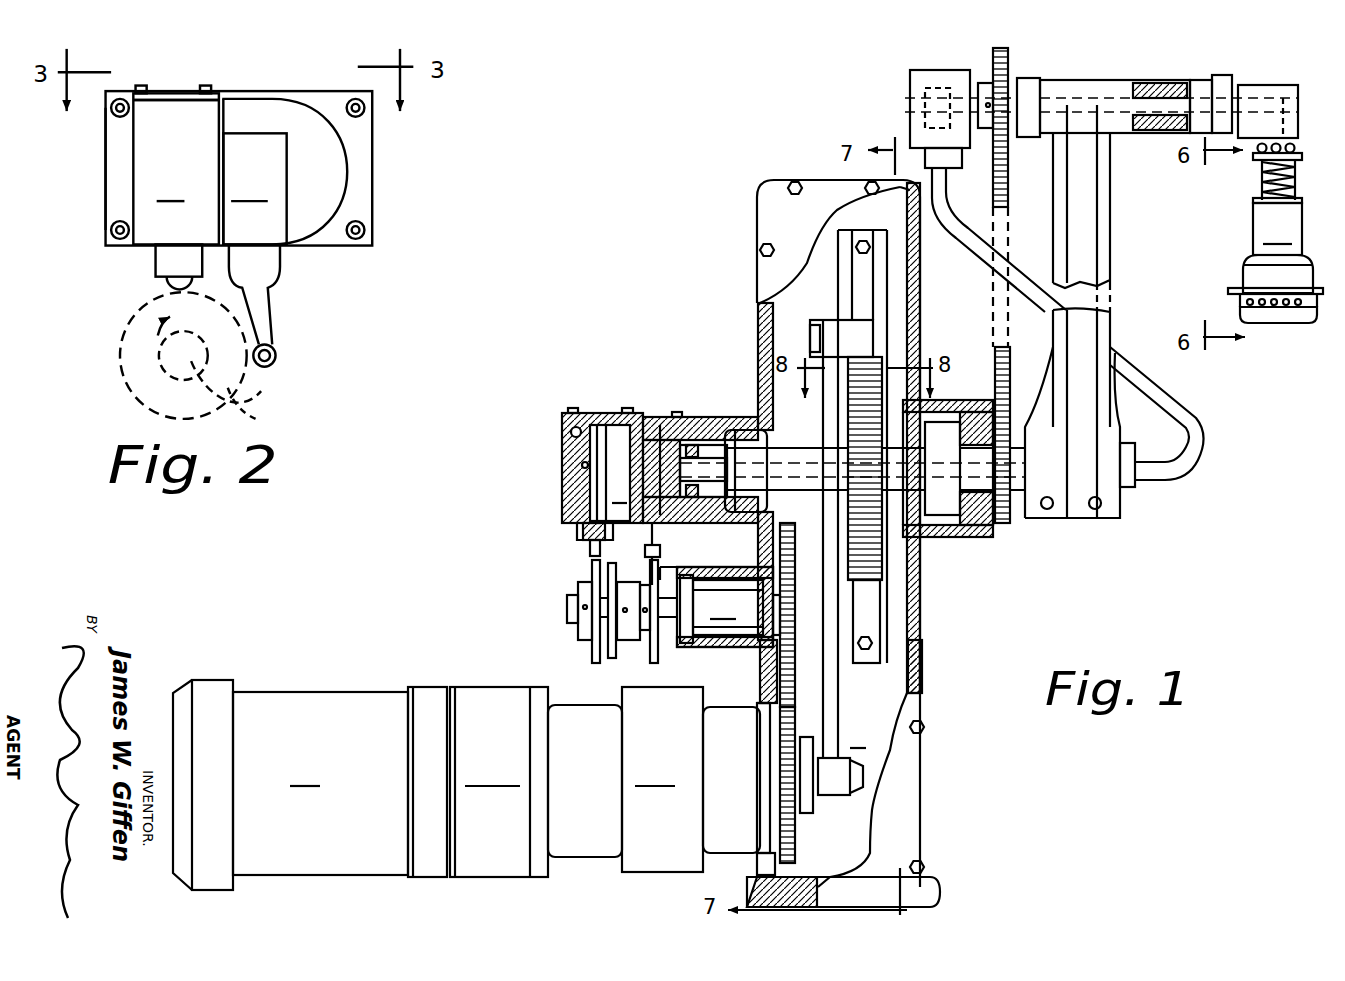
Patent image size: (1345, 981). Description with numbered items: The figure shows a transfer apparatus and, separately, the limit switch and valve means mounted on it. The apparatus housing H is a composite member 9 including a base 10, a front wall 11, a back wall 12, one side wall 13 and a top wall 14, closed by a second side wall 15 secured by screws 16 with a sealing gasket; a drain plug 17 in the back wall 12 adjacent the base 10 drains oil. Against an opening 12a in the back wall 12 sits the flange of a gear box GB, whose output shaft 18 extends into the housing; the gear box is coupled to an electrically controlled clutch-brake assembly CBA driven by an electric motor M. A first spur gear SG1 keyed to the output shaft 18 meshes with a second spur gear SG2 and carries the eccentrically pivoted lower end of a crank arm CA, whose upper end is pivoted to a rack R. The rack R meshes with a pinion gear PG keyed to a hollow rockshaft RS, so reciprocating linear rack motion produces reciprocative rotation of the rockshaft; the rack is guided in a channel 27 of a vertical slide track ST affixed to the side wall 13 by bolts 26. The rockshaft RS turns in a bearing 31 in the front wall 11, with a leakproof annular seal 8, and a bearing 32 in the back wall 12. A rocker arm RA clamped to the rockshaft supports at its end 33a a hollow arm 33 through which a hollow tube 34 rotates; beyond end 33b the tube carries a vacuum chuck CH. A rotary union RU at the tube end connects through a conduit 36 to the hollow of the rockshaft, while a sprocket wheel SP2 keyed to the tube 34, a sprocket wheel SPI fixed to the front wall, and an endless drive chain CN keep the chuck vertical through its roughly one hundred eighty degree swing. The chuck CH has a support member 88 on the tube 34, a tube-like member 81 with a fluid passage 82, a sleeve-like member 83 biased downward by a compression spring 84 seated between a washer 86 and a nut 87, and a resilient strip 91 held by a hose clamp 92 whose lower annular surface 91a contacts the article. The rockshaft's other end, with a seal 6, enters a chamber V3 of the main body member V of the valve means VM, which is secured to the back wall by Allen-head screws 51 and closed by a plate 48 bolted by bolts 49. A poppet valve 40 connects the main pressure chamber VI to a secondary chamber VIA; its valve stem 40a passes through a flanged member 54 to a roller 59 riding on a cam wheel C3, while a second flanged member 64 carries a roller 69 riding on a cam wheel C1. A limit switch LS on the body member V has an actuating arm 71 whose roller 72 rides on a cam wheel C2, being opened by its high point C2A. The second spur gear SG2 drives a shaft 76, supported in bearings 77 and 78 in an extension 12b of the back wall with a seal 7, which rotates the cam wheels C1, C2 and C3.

In FIG. 1, the leakproof annular seal 6 is at (697, 440).
In FIG. 1, the leakproof annular seal 7 is at (693, 648).
In FIG. 1, the leakproof annular seal 8 is at (970, 538).
In FIG. 1, the composite member 9 is at (858, 736).
In FIG. 1, the base 10 is at (942, 893).
In FIG. 1, the front wall 11 is at (915, 622).
In FIG. 1, the back wall 12 is at (758, 312).
In FIG. 1, the opening 12a is at (760, 705).
In FIG. 1, the extension of back wall 12b is at (707, 667).
In FIG. 1, the side wall 13 is at (923, 660).
In FIG. 1, the top wall 14 is at (903, 190).
In FIG. 1, the second side wall 15 is at (775, 207).
In FIG. 1, the screws 16 is at (795, 212).
In FIG. 1, the drain plug 17 is at (757, 860).
In FIG. 1, the output shaft 18 is at (818, 775).
In FIG. 1, the screws or bolts 26 is at (872, 247).
In FIG. 1, the groove or channel 27 is at (875, 600).
In FIG. 1, the bearing 31 is at (940, 440).
In FIG. 1, the bearing 32 is at (753, 438).
In FIG. 1, the hollow arm 33 is at (1125, 137).
In FIG. 1, the first end of arm 33a is at (1040, 90).
In FIG. 1, the second end of arm 33b is at (1200, 80).
In FIG. 1, the hollow tube 34 is at (1160, 130).
In FIG. 1, the fluid conduit or pipe 36 is at (1168, 412).
In FIG. 1, the poppet valve 40 is at (583, 418).
In FIG. 1, the valve stem 40a is at (593, 500).
In FIG. 2, the plate 48 is at (162, 92).
In FIG. 1, the plate 48 is at (592, 408).
In FIG. 2, the bolts 49 is at (186, 80).
In FIG. 1, the bolts 49 is at (678, 410).
In FIG. 2, the Allen-head screws 51 is at (97, 190).
In FIG. 2, the flanged member 54 is at (140, 240).
In FIG. 1, the flanged member 54 is at (583, 540).
In FIG. 2, the roller or wheel 59 is at (150, 258).
In FIG. 1, the roller or wheel 59 is at (590, 550).
In FIG. 1, the flanged member 64 is at (660, 545).
In FIG. 1, the roller or wheel 69 is at (655, 548).
In FIG. 2, the actuating arm 71 is at (244, 282).
In FIG. 2, the wheel or roller 72 is at (298, 358).
In FIG. 2, the axle or shaft 76 is at (245, 416).
In FIG. 1, the axle or shaft 76 is at (725, 607).
In FIG. 1, the bearing 77 is at (790, 548).
In FIG. 1, the bearing 78 is at (708, 590).
In FIG. 1, the tube-like member 81 is at (1295, 176).
In FIG. 1, the aeriform fluid passage 82 is at (1295, 100).
In FIG. 1, the sleeve-like member 83 is at (1248, 278).
In FIG. 1, the compression spring 84 is at (1253, 201).
In FIG. 1, the washer 86 is at (1253, 158).
In FIG. 1, the nut 87 is at (1294, 144).
In FIG. 1, the support member 88 is at (1262, 88).
In FIG. 1, the strip of resilient material 91 is at (1300, 316).
In FIG. 1, the lower annular surface 91a is at (1290, 325).
In FIG. 1, the hose clamp 92 is at (1275, 316).
In FIG. 2, the valve means VM is at (337, 158).
In FIG. 1, the valve means VM is at (560, 493).
In FIG. 2, the main body member V is at (176, 168).
In FIG. 1, the main body member V is at (619, 493).
In FIG. 2, the limit switch LS is at (254, 172).
In FIG. 2, the cam wheel C2 is at (110, 325).
In FIG. 1, the cam wheel C2 is at (606, 663).
In FIG. 2, the high point C2A is at (236, 356).
In FIG. 1, the cam wheel C1 is at (652, 660).
In FIG. 1, the cam wheel C3 is at (567, 592).
In FIG. 1, the electric motor M is at (290, 785).
In FIG. 1, the clutch-brake assembly CBA is at (478, 782).
In FIG. 1, the gear box GB is at (654, 779).
In FIG. 1, the slide track ST is at (865, 292).
In FIG. 1, the crank arm CA is at (840, 703).
In FIG. 1, the rack R is at (884, 557).
In FIG. 1, the pinion gear PG is at (848, 432).
In FIG. 1, the first spur gear SG1 is at (797, 843).
In FIG. 1, the second spur gear SG2 is at (797, 640).
In FIG. 1, the sprocket wheel SPI is at (1008, 522).
In FIG. 1, the sprocket wheel SP2 is at (990, 62).
In FIG. 1, the endless drive chain CN is at (995, 353).
In FIG. 1, the hollow rockshaft RS is at (1125, 490).
In FIG. 1, the rocker arm RA is at (1100, 253).
In FIG. 1, the rotary union RU is at (910, 87).
In FIG. 1, the main pressure chamber VI is at (570, 432).
In FIG. 1, the secondary chamber VIA is at (581, 463).
In FIG. 1, the aeriform fluid chamber V3 is at (682, 405).
In FIG. 1, the vacuum chuck CH is at (1277, 229).